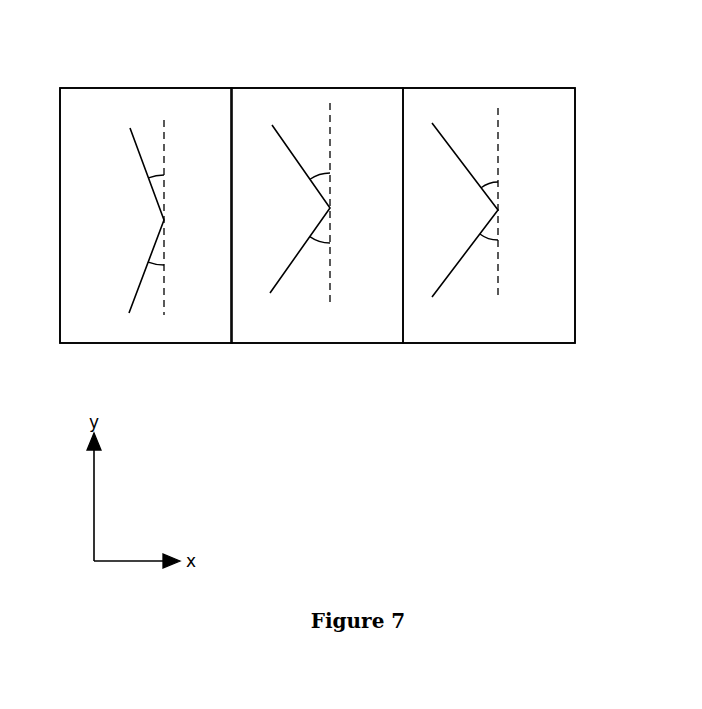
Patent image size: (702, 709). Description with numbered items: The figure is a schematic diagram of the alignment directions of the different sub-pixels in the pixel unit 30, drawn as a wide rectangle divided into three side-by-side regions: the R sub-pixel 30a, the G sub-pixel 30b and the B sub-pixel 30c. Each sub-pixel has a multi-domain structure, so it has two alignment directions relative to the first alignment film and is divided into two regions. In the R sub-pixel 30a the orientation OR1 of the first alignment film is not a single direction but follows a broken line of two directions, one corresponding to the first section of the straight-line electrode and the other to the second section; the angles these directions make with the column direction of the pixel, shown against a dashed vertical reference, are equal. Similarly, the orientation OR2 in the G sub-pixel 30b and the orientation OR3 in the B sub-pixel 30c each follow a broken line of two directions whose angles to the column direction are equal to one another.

The pixel unit 30 is at (316, 368).
The R sub-pixel 30a is at (97, 120).
The G sub-pixel 30b is at (245, 120).
The B sub-pixel 30c is at (420, 120).
The orientation of the first alignment film relative to the R sub-pixel OR1 is at (132, 130).
The orientation of the first alignment film relative to the G sub-pixel OR2 is at (277, 132).
The orientation of the first alignment film relative to the B sub-pixel OR3 is at (443, 135).